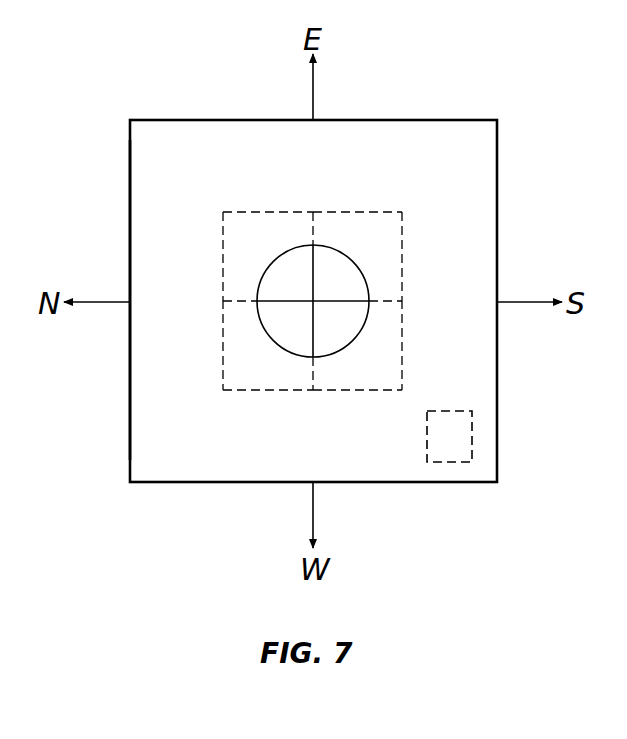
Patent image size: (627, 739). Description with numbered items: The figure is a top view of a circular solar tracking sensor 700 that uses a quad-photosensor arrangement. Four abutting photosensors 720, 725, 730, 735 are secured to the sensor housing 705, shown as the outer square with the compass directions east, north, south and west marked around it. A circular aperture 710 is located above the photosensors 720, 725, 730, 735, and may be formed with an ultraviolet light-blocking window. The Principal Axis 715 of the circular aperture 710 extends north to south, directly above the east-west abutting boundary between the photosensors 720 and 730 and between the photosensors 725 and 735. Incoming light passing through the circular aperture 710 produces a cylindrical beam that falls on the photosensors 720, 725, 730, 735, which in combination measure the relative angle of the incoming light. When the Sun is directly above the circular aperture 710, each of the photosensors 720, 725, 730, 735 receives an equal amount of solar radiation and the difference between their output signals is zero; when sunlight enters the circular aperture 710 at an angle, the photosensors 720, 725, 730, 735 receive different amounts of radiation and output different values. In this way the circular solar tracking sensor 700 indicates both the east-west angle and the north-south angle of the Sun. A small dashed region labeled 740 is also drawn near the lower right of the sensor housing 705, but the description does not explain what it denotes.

The circular solar tracking sensor 700 is at (497, 120).
The sensor housing 705 is at (130, 232).
The circular aperture 710 is at (352, 262).
The Principal Axis 715 is at (276, 302).
The photosensor 720 is at (223, 212).
The photosensor 725 is at (402, 212).
The photosensor 730 is at (223, 390).
The photosensor 735 is at (405, 393).
The small dashed region 740 is at (474, 435).